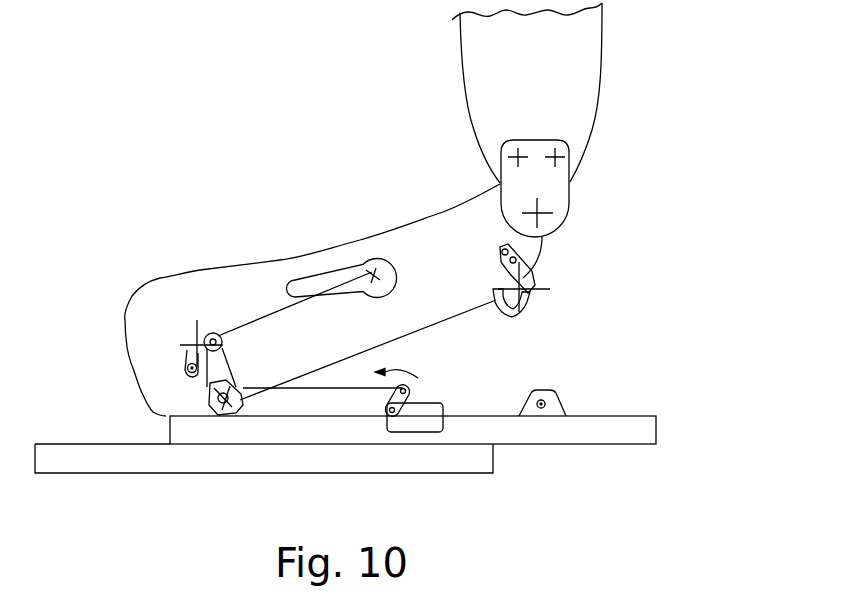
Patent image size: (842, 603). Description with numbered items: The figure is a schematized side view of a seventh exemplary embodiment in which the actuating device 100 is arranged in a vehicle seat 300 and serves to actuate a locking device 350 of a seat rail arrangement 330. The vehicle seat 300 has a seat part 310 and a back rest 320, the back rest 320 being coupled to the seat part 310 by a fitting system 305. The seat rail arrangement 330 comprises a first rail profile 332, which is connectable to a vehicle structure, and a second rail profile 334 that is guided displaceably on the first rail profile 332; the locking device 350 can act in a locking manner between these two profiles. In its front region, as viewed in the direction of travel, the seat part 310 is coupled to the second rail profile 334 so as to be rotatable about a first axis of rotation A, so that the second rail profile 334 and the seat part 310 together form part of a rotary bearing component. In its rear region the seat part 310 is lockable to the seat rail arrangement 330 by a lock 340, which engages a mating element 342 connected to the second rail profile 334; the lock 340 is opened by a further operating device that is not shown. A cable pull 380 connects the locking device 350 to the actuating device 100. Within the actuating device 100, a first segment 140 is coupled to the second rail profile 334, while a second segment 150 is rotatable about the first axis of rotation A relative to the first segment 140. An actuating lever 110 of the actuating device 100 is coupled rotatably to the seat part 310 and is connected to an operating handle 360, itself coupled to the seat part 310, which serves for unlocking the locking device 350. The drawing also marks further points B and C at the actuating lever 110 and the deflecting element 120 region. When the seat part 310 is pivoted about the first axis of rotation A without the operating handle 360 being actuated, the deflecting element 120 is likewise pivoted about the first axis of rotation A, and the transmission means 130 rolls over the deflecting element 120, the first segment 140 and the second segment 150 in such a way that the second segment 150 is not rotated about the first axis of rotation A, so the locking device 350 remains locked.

The vehicle seat 300 is at (255, 145).
The seat part 310 is at (200, 290).
The back rest 320 is at (567, 65).
The fitting system 305 is at (587, 190).
The lock 340 is at (537, 281).
The operating handle 360 is at (348, 268).
The transmission means 130 is at (234, 385).
The deflecting element 120 is at (237, 330).
The second segment 150 is at (237, 402).
The actuating lever 110 is at (183, 352).
The first segment 140 is at (207, 397).
The actuating device 100 is at (198, 390).
The cable pull 380 is at (340, 390).
The locking device 350 is at (415, 425).
The seat rail arrangement 330 is at (675, 431).
The second rail profile 334 is at (480, 432).
The first rail profile 332 is at (472, 458).
The mating element 342 is at (549, 392).
The first axis of rotation A is at (223, 398).
The axis B is at (190, 343).
The axis C is at (211, 333).